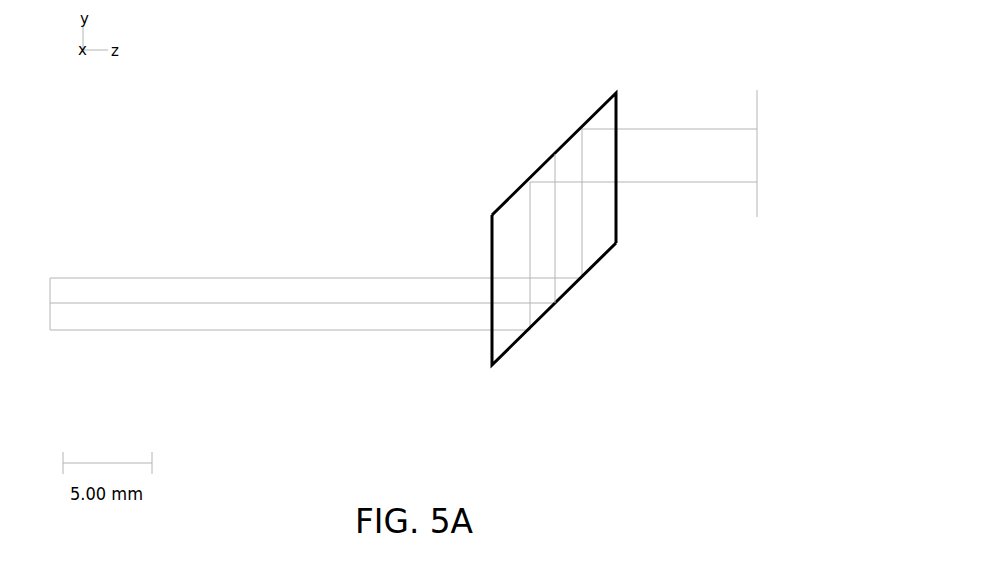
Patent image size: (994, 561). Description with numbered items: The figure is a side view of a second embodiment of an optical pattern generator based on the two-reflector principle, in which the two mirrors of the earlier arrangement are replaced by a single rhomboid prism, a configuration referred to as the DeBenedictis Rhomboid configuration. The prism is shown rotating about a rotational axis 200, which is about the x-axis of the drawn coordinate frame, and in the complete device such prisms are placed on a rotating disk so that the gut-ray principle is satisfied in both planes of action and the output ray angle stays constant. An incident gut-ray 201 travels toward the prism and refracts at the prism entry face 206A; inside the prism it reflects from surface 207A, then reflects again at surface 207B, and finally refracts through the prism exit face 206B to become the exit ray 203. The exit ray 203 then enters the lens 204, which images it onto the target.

The rotational axis 200 is at (50, 303).
The incident gut-ray 201 is at (127, 303).
The exit ray 203 is at (652, 153).
The lens 204 is at (757, 199).
The prism entry face 206A is at (492, 304).
The prism exit face 206B is at (616, 153).
The reflecting surface 207A is at (555, 303).
The reflecting surface 207B is at (552, 153).